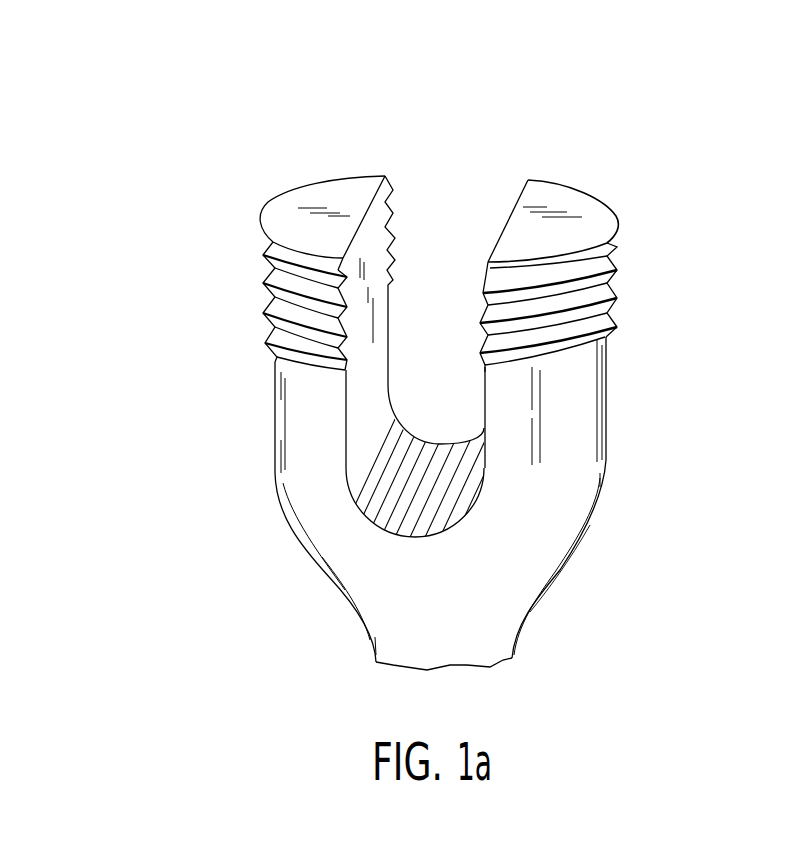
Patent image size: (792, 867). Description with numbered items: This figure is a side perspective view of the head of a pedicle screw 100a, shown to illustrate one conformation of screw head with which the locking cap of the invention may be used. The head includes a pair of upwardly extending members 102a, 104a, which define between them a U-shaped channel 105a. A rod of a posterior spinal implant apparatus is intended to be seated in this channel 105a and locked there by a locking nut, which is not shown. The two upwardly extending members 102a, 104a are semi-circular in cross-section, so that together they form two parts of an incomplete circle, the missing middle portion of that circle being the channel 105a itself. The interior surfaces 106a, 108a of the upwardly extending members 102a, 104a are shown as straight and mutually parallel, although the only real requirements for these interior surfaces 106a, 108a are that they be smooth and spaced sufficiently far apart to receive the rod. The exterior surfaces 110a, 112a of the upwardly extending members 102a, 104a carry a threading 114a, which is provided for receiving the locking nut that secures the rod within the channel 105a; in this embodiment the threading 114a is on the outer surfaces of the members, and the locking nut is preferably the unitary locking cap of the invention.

The pedicle screw 100a is at (640, 412).
The upwardly extending member 102a is at (333, 183).
The upwardly extending member 104a is at (567, 186).
The U-shaped channel 105a is at (472, 410).
The interior surface 106a is at (377, 242).
The interior surface 108a is at (502, 235).
The exterior surface 110a is at (250, 408).
The exterior surface 112a is at (643, 290).
The threading 114a is at (282, 340).